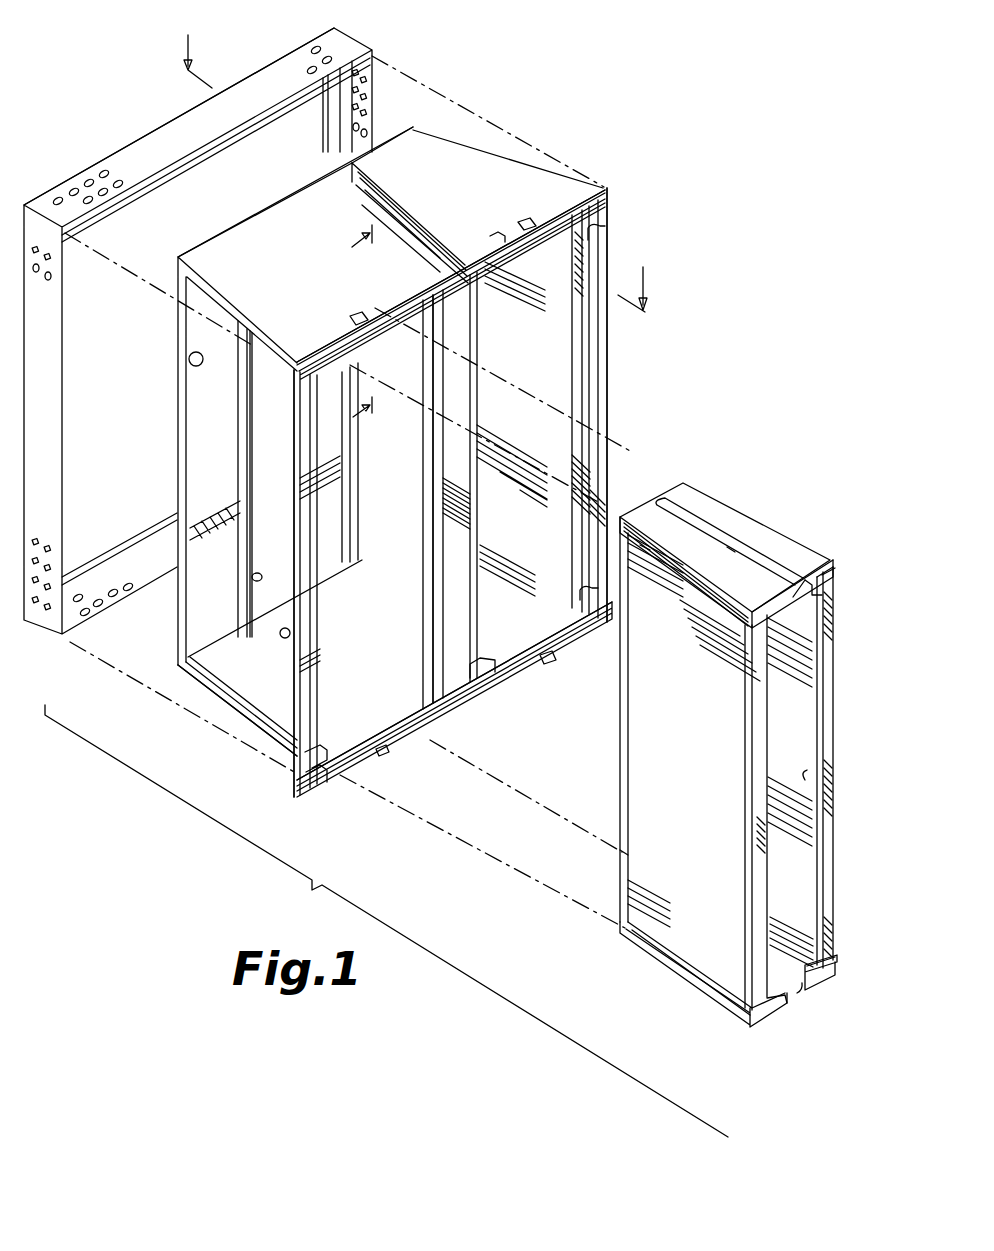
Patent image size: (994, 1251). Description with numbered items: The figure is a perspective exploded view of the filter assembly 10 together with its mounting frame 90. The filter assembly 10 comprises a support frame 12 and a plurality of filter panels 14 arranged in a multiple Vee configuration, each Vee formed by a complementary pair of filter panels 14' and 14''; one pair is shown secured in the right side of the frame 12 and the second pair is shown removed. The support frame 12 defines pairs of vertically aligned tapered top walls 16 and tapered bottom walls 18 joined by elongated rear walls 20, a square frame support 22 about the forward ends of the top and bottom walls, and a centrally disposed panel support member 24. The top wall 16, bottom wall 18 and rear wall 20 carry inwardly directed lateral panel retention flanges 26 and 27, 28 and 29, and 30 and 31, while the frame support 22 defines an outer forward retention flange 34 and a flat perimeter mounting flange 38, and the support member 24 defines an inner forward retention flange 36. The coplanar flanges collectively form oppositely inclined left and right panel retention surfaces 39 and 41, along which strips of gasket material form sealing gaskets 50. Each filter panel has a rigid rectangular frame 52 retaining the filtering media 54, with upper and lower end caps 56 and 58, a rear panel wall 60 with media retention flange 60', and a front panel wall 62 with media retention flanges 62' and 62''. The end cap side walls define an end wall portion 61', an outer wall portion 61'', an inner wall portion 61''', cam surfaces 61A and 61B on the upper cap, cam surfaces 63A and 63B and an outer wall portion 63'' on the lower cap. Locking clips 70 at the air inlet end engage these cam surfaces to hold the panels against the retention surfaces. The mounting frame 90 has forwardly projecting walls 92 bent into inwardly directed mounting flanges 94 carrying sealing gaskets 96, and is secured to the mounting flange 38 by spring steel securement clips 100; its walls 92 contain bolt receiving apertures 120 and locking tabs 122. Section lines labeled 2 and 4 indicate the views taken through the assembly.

The filter assembly 10 is at (600, 102).
The support frame 12 is at (608, 215).
The filter panels 14 is at (590, 530).
The filter panel 14' is at (484, 501).
The filter panel 14'' is at (662, 413).
The tapered top wall 16 is at (279, 289).
The tapered bottom wall 18 is at (284, 702).
The rear wall 20 is at (225, 457).
The frame support 22 is at (610, 342).
The panel support member 24 is at (457, 543).
The lateral panel retention flange 26 is at (210, 285).
The lateral panel retention flange 27 is at (265, 228).
The lateral panel retention flange 28 is at (387, 595).
The lateral panel retention flange 29 is at (280, 642).
The lateral panel retention flange 30 is at (183, 484).
The lateral panel retention flange 31 is at (252, 577).
The outer forward lateral panel retention flange 34 is at (594, 390).
The inner forward lateral panel retention flange 36 is at (437, 620).
The perimeter mounting flange 38 is at (553, 216).
The left panel retention surface 39 is at (189, 358).
The right panel retention surface 41 is at (250, 415).
The sealing gaskets 50 is at (245, 393).
The frame 52 is at (635, 520).
The filtering media 54 is at (803, 667).
The upper end cap 56 is at (693, 503).
The lower end cap 58 is at (722, 1008).
The rear panel wall 60 is at (628, 722).
The media retention flange 60' is at (596, 853).
The cam surface 61A is at (652, 505).
The cam surface 61B is at (665, 500).
The end wall portion 61' is at (853, 568).
The outer wall portion 61'' is at (654, 588).
The inner wall portion 61''' is at (760, 497).
The front panel wall 62 is at (777, 788).
The media retention flange 62' is at (726, 836).
The media retention flange 62'' is at (843, 762).
The cam surface 63A is at (797, 993).
The cam surface 63B is at (790, 1007).
The outer wall portion 63'' is at (676, 972).
The locking clips 70 is at (585, 231).
The mounting frame 90 is at (360, 38).
The frame walls 92 is at (146, 178).
The mounting flanges 94 is at (323, 120).
The sealing gaskets 96 is at (333, 97).
The securement clips 100 is at (517, 225).
The bolt receiving apertures 120 is at (50, 280).
The locking tabs 122 is at (128, 584).
The section line 2 is at (414, 170).
The section line 4 is at (352, 332).